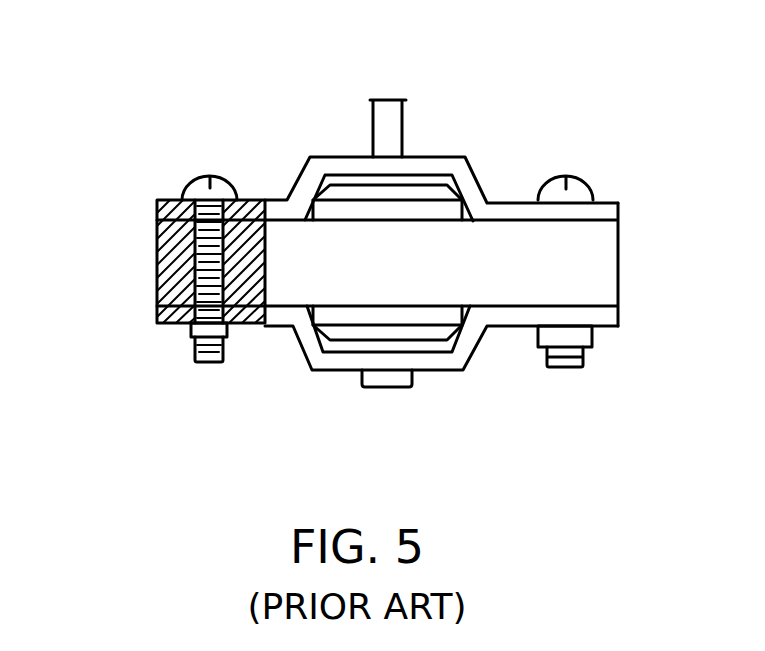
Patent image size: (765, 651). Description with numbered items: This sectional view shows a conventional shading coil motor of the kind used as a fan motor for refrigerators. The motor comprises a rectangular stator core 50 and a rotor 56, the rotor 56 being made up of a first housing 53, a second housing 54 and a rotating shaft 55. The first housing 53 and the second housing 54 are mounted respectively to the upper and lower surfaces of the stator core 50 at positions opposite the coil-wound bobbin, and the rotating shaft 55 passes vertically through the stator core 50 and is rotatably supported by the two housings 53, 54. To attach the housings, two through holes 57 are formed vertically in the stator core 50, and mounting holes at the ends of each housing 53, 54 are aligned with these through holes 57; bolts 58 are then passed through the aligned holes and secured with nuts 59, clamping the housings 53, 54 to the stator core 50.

The stator core 50 is at (155, 230).
The first housing 53 is at (302, 186).
The second housing 54 is at (343, 363).
The rotating shaft 55 is at (402, 100).
The rotor 56 is at (448, 188).
The through holes 57 is at (155, 257).
The bolts 58 is at (192, 178).
The nuts 59 is at (188, 332).